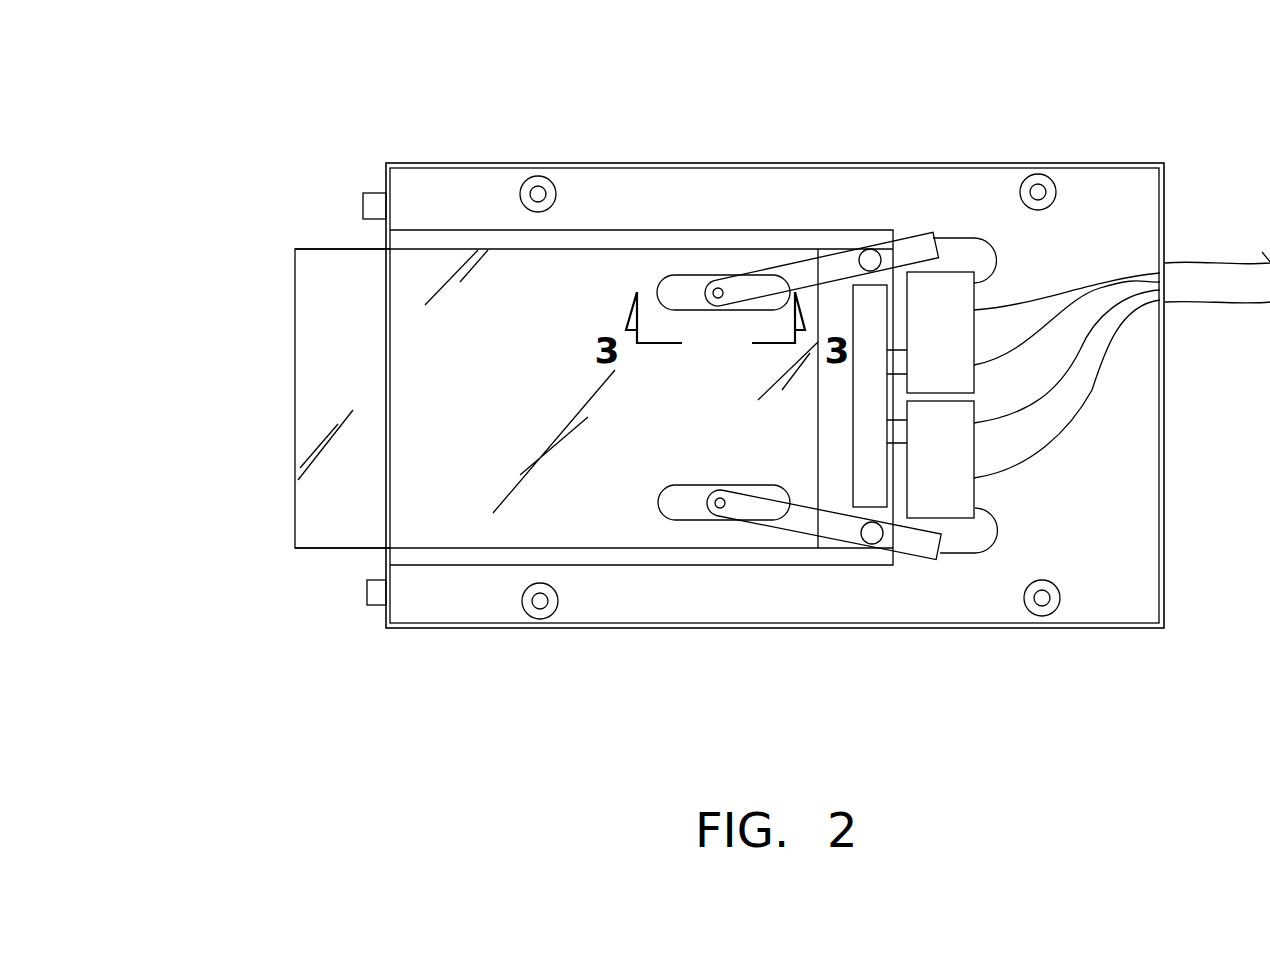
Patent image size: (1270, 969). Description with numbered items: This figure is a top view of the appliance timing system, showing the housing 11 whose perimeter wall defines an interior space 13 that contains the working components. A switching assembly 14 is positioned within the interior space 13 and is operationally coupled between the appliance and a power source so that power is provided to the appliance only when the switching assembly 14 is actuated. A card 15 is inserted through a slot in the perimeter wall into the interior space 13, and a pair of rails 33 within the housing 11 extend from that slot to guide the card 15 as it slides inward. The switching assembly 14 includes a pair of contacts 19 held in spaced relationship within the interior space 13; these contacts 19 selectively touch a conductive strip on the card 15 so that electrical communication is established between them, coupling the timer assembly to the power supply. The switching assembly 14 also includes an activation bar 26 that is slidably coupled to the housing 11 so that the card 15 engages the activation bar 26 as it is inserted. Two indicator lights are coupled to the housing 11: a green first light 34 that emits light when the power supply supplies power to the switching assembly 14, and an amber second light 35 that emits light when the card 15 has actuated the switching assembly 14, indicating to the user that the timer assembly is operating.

The housing 11 is at (839, 182).
The interior space 13 is at (744, 197).
The switching assembly 14 is at (1002, 490).
The card 15 is at (332, 528).
The contacts 19 is at (720, 508).
The activation bar 26 is at (870, 426).
The rails 33 is at (641, 240).
The first light 34 is at (375, 193).
The second light 35 is at (367, 597).